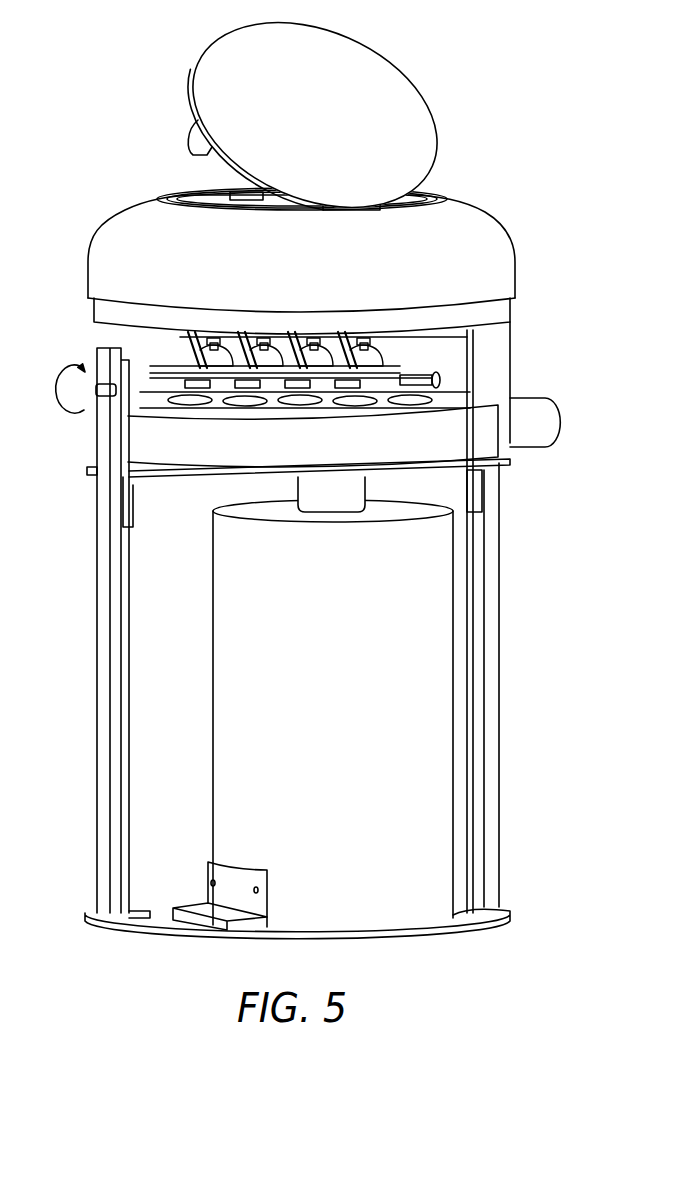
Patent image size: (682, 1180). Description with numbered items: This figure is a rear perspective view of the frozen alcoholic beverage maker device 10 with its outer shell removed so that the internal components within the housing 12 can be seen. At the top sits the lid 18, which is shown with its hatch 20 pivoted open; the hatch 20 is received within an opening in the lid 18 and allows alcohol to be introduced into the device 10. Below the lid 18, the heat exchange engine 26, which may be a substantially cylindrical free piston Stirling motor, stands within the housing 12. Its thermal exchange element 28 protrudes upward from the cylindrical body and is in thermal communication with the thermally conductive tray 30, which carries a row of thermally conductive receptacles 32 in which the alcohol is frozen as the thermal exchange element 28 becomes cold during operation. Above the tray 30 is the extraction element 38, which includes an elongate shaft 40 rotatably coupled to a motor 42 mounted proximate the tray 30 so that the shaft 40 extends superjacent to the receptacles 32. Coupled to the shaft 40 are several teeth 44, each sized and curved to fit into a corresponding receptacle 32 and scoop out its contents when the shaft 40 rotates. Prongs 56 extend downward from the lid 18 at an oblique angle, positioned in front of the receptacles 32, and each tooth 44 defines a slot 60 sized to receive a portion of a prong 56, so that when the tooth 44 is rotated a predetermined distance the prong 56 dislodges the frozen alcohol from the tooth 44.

The frozen alcoholic beverage maker device 10 is at (109, 115).
The housing 12 is at (493, 687).
The lid 18 is at (470, 203).
The hatch 20 is at (363, 72).
The heat exchange engine 26 is at (453, 602).
The thermal exchange element 28 is at (367, 491).
The tray 30 is at (478, 435).
The thermally conductive receptacle 32 is at (187, 407).
The extraction element 38 is at (153, 410).
The elongate shaft 40 is at (410, 380).
The motor 42 is at (530, 400).
The tooth 44 is at (383, 355).
The prong 56 is at (205, 352).
The slot 60 is at (135, 362).